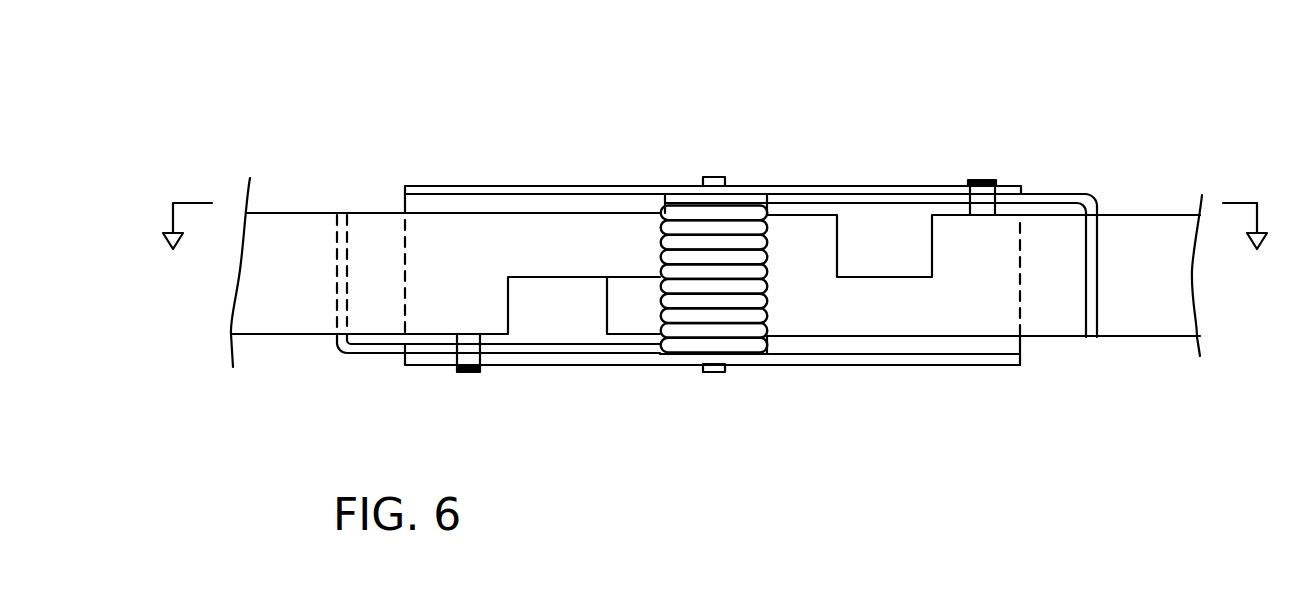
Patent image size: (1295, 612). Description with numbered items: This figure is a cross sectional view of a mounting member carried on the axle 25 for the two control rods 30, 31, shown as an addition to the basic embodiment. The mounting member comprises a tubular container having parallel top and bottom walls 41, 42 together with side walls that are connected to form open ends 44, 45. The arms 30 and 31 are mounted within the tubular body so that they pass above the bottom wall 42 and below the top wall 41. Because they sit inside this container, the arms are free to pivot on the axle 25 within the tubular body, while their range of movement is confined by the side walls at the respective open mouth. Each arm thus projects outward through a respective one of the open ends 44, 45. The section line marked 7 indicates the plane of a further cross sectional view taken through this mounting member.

The section line 7- 7 is at (715, 214).
The axle 25 is at (713, 177).
The control rod 30 is at (310, 223).
The control rod 31 is at (1142, 225).
The top wall 41 is at (553, 186).
The bottom wall 42 is at (535, 365).
The open end 44 is at (395, 190).
The open end 45 is at (1022, 347).